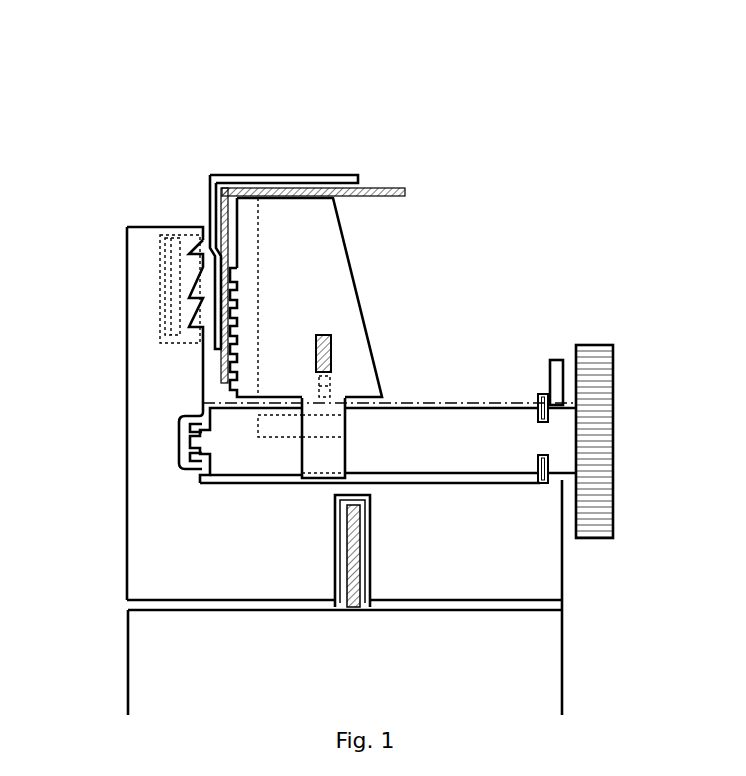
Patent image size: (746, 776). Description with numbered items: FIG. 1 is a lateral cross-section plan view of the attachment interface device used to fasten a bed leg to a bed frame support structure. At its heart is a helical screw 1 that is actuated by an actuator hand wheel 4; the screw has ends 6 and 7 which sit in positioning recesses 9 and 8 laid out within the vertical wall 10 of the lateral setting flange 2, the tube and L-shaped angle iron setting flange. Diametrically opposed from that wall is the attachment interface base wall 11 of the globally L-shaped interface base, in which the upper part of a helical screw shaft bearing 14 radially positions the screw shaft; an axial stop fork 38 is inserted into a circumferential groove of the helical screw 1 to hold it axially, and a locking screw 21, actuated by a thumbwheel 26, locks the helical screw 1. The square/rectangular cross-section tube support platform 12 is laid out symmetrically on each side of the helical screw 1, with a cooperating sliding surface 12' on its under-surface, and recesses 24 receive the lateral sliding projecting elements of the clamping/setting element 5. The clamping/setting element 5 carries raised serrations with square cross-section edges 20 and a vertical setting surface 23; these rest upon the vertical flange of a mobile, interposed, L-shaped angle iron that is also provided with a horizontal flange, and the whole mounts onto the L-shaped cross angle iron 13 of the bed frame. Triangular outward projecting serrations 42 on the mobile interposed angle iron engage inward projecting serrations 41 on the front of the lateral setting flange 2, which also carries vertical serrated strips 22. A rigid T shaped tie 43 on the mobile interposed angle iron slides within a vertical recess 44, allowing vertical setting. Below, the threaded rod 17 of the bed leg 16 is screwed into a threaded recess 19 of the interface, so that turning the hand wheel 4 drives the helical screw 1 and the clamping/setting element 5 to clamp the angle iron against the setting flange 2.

The helical screw 1 is at (397, 386).
The lateral setting flange 2 is at (112, 344).
The actuator hand wheel 4 is at (615, 420).
The clamping/setting element 5 is at (332, 297).
The end of the helical screw 6 is at (188, 437).
The end of the helical screw 7 is at (570, 417).
The positioning recess 8 is at (620, 533).
The positioning recess 9 is at (134, 411).
The vertical wall of the lateral setting flange 10 is at (267, 211).
The attachment interface base wall 11 is at (552, 480).
The tube support platform 12 is at (382, 308).
The cooperating sliding surface 12' is at (204, 474).
The L-shaped cross angle iron 13 is at (386, 184).
The helical screw shaft bearing 14 is at (557, 358).
The bed leg 16 is at (452, 660).
The threaded rod 17 is at (344, 587).
The threaded recess 19 is at (222, 594).
The raised serrations 20 is at (240, 329).
The locking screw 21 is at (333, 380).
The vertical serrated strip 22 is at (197, 331).
The vertical setting surface 23 is at (257, 196).
The recess 24 is at (278, 418).
The thumbwheel 26 is at (335, 341).
The axial stop fork 38 is at (547, 485).
The inward projecting serrations 41 is at (182, 265).
The outward projecting serrations 42 is at (214, 257).
The rigid T shaped tie 43 is at (167, 247).
The vertical recess 44 is at (163, 341).